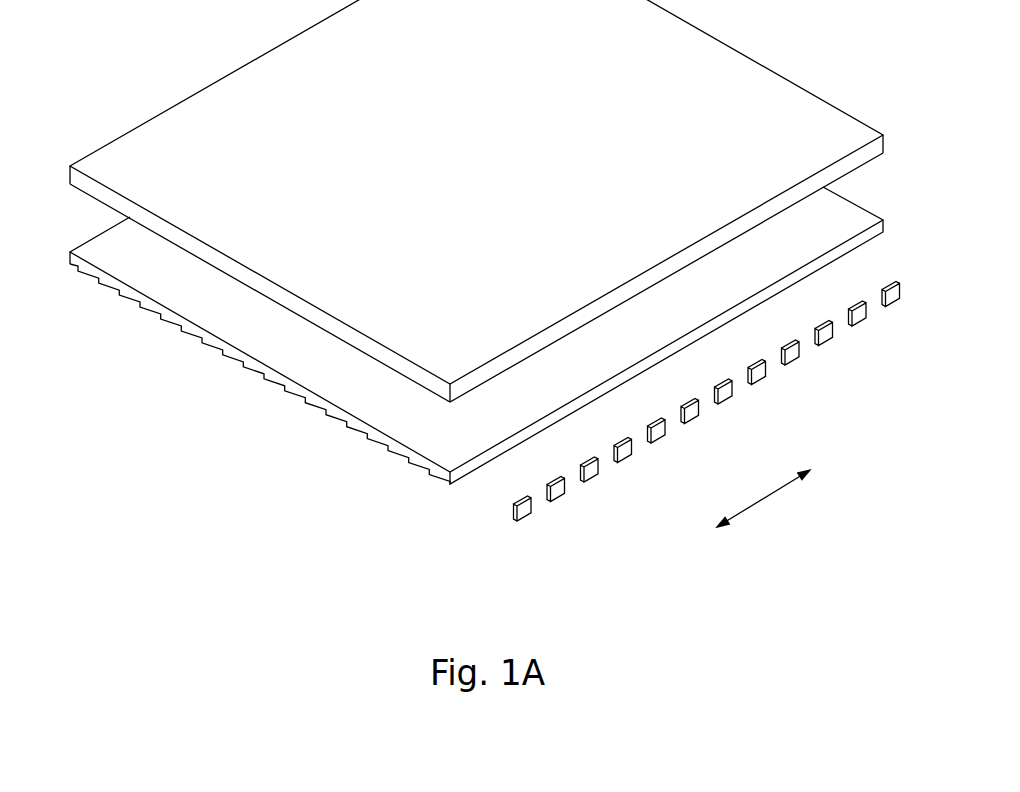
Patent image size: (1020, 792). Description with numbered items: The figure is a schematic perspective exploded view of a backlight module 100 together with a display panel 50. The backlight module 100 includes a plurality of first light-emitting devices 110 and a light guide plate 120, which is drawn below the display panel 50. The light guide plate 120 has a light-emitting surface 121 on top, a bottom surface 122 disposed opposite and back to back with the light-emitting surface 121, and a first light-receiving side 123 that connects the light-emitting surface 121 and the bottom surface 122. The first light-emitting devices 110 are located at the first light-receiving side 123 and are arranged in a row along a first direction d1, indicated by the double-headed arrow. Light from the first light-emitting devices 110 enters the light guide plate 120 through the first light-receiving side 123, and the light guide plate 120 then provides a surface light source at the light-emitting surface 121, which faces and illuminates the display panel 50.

The display panel 50 is at (147, 132).
The backlight module 100 is at (472, 371).
The first light-emitting devices 110 is at (483, 539).
The light guide plate 120 is at (476, 360).
The light-emitting surface 121 is at (283, 364).
The bottom surface 122 is at (310, 422).
The first light-receiving side 123 is at (453, 473).
The first direction d1 is at (763, 501).